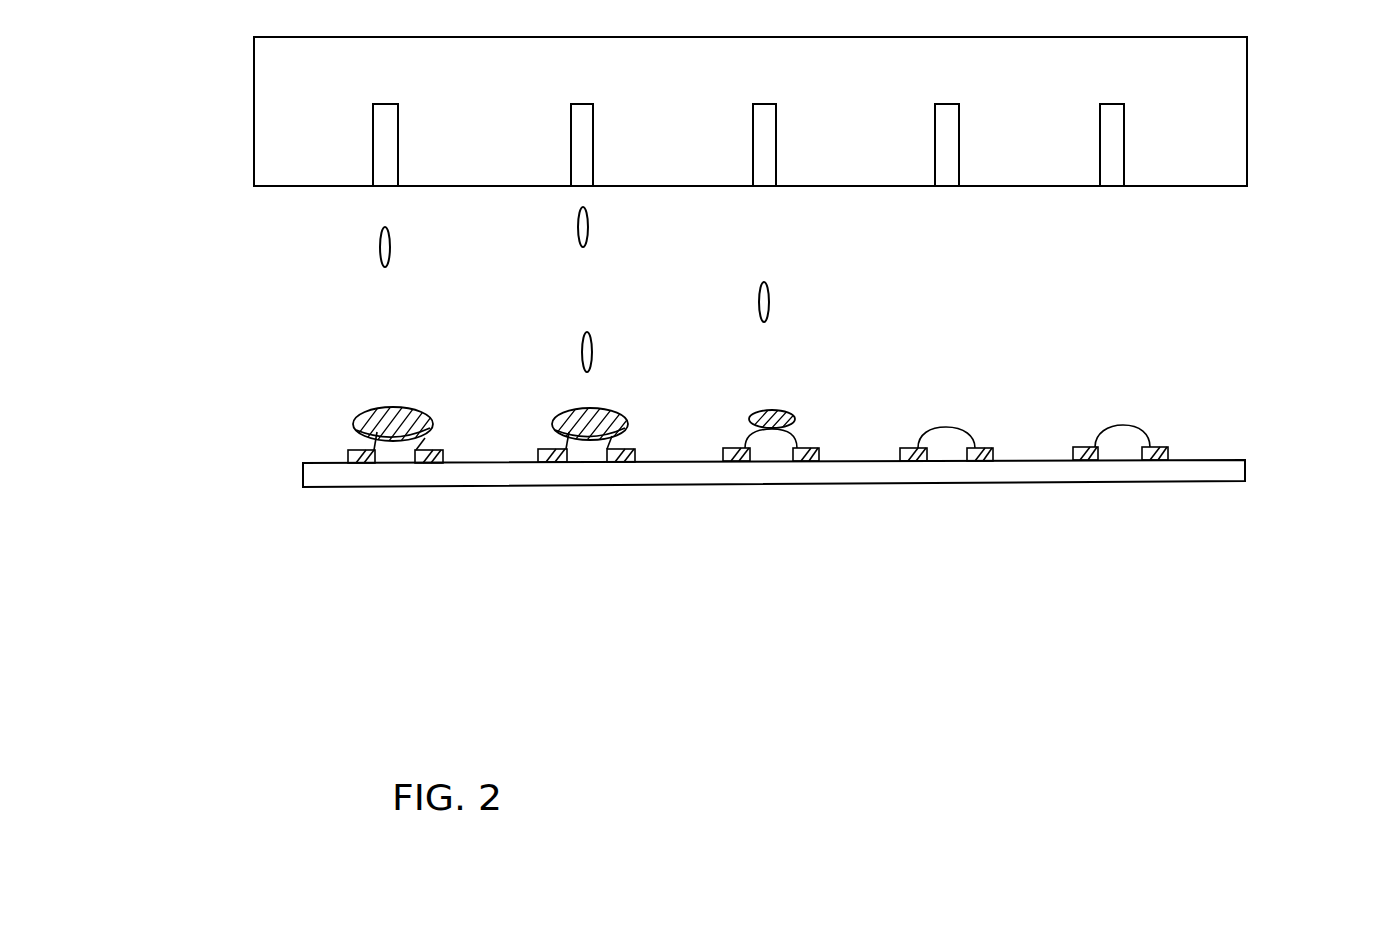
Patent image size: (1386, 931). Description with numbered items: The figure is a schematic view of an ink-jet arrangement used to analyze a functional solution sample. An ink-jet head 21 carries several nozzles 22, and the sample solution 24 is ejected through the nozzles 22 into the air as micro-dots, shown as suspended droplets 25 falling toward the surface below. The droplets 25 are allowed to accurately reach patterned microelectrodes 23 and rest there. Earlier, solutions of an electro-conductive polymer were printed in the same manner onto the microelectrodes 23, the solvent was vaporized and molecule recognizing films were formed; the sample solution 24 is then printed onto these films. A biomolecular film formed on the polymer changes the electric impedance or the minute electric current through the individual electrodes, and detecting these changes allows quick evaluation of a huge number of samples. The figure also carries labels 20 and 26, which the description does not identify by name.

The ink-jet head 20 is at (817, 144).
The ink-jet head 21 is at (598, 195).
The nozzles 22 is at (860, 507).
The microelectrodes 23 is at (758, 525).
The sample solution 24 is at (421, 314).
The suspended droplets of sample solution 25 is at (774, 532).
The test solution 26 is at (618, 563).